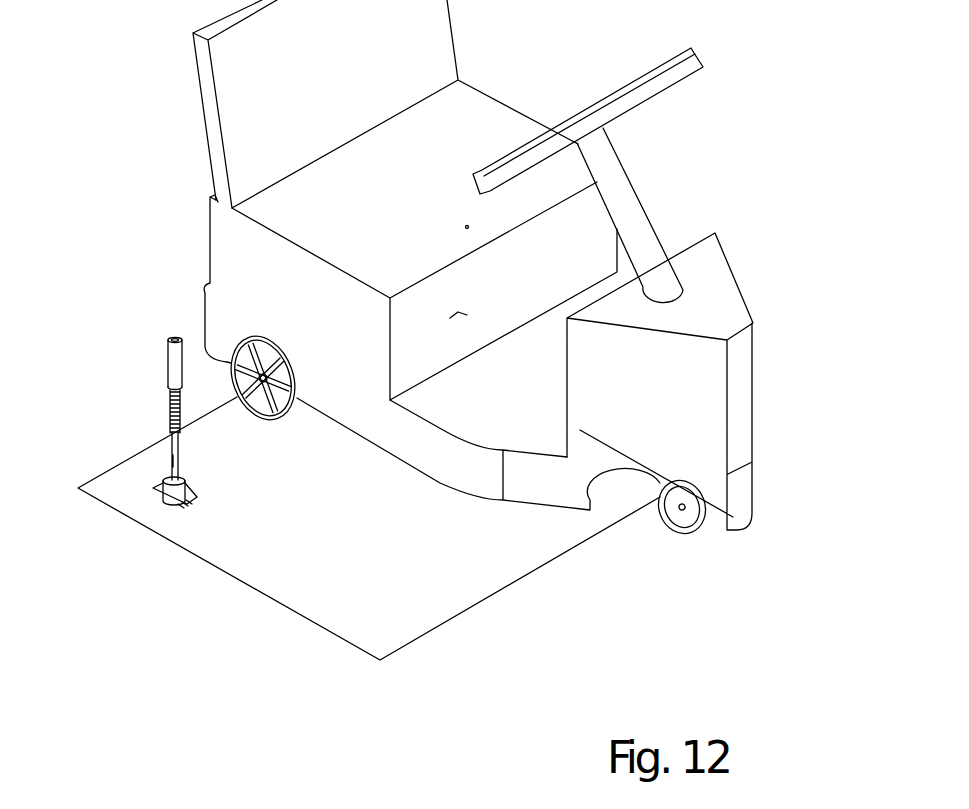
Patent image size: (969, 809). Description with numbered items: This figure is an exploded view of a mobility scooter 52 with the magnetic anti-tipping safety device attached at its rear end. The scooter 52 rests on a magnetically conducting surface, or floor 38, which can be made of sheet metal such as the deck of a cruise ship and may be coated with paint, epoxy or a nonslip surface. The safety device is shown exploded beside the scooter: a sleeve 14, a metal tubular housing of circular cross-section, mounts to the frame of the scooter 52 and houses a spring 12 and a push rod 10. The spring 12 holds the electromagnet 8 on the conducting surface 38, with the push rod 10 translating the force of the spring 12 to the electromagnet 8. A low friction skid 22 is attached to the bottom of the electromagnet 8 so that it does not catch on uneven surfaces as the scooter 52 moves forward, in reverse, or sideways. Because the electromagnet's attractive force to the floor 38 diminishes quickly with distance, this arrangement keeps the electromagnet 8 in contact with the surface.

The mobility scooter 52 is at (290, 288).
The floor 38 is at (457, 575).
The sleeve 14 is at (175, 355).
The spring 12 is at (172, 437).
The push rod 10 is at (166, 482).
The electromagnet 8 is at (177, 495).
The low friction skid 22 is at (180, 505).